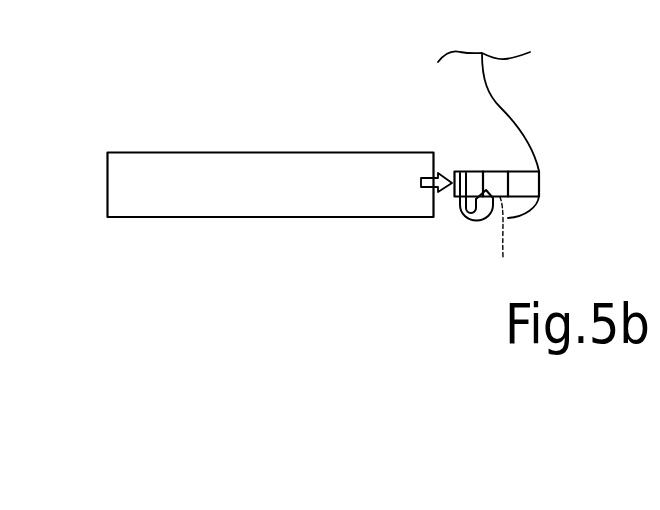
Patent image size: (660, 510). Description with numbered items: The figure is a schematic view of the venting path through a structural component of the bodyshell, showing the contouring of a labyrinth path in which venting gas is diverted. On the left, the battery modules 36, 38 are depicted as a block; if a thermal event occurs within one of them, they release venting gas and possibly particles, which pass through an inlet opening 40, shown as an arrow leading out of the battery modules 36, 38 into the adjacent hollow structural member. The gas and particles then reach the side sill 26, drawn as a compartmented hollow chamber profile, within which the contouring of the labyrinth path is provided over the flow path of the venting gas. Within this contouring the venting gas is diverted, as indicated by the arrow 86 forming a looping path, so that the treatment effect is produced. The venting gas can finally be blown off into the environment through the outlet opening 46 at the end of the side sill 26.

The battery module 36 is at (271, 123).
The battery module 38 is at (263, 153).
The inlet opening 40 is at (430, 190).
The outlet opening 46 is at (548, 183).
The side sill 26 is at (477, 171).
The arrow 86 is at (477, 219).